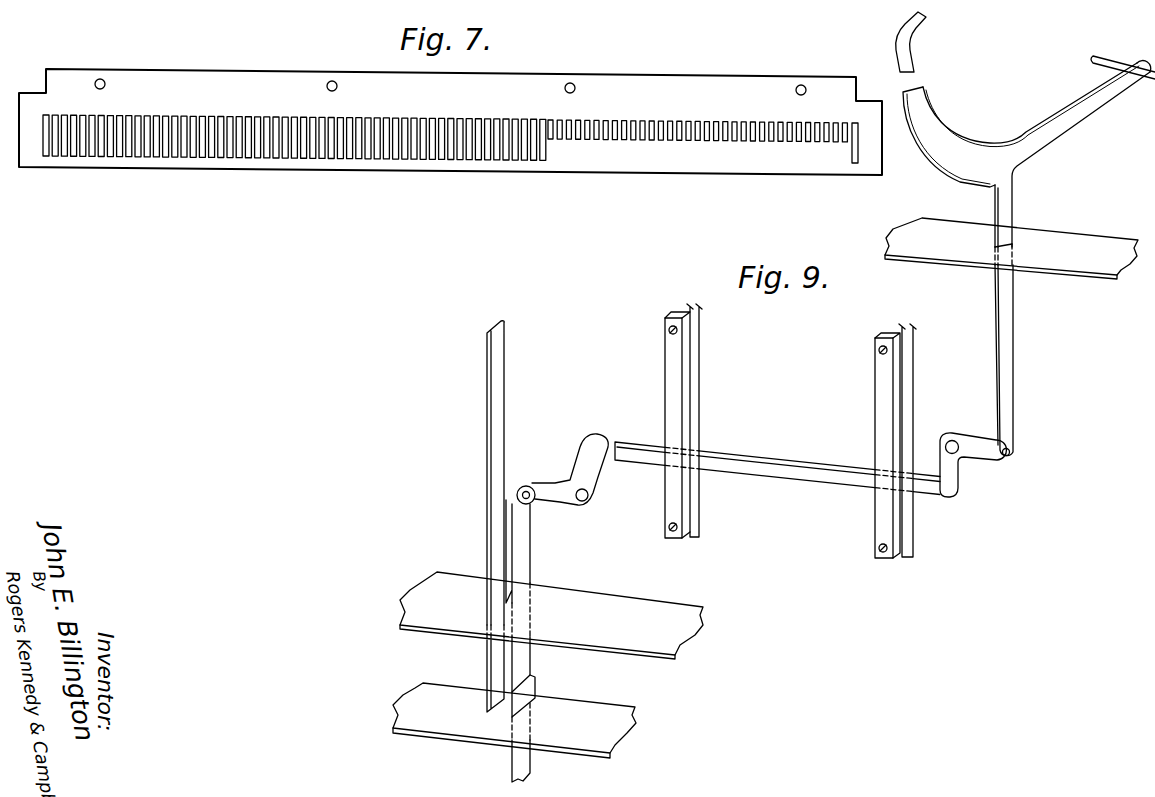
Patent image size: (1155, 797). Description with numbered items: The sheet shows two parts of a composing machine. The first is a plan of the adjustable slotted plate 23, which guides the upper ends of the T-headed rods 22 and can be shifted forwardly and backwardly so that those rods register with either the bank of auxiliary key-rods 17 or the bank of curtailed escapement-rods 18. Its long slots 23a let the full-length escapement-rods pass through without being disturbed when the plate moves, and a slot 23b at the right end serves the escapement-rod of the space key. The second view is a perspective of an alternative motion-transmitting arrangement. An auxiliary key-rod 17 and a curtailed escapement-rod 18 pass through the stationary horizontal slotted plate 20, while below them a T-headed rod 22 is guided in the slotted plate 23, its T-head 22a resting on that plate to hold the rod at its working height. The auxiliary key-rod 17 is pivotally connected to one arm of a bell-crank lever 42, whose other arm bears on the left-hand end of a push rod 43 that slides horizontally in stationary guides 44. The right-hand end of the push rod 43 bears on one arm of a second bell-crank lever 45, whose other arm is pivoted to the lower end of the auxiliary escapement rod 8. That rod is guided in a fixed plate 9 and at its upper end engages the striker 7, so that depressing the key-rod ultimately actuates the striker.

In FIG. 7, the slotted plate 23 is at (588, 90).
In FIG. 9, the slotted plate 23 is at (428, 720).
In FIG. 7, the slots 23a is at (190, 157).
In FIG. 7, the slot 23b is at (853, 164).
In FIG. 9, the striker 7 is at (923, 103).
In FIG. 9, the auxiliary escapement rod 8 is at (1010, 375).
In FIG. 9, the fixed plate 9 is at (922, 243).
In FIG. 9, the auxiliary key-rod 17 is at (520, 555).
In FIG. 9, the curtailed escapement-rod 18 is at (495, 657).
In FIG. 9, the slotted plate 20 is at (453, 585).
In FIG. 9, the T-headed rod 22 is at (522, 765).
In FIG. 9, the T-head 22a is at (520, 690).
In FIG. 9, the bell-crank lever 42 is at (568, 505).
In FIG. 9, the push rod 43 is at (773, 470).
In FIG. 9, the stationary guides 44 is at (685, 423).
In FIG. 9, the bell-crank lever 45 is at (950, 477).